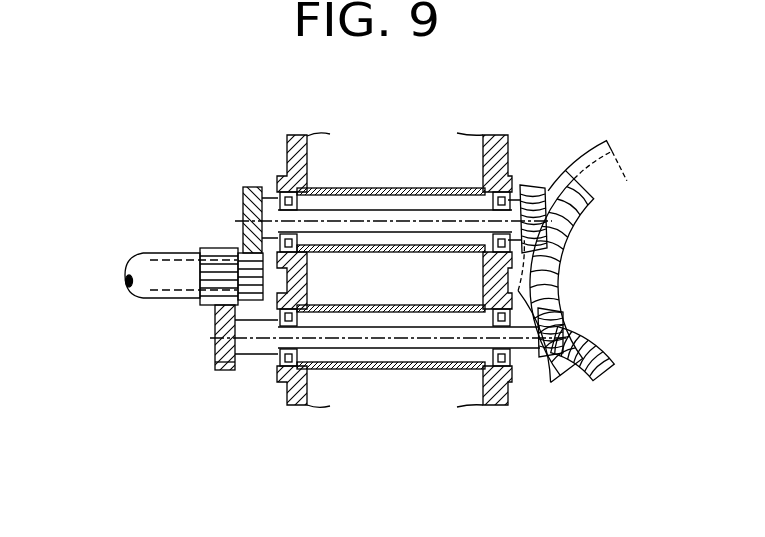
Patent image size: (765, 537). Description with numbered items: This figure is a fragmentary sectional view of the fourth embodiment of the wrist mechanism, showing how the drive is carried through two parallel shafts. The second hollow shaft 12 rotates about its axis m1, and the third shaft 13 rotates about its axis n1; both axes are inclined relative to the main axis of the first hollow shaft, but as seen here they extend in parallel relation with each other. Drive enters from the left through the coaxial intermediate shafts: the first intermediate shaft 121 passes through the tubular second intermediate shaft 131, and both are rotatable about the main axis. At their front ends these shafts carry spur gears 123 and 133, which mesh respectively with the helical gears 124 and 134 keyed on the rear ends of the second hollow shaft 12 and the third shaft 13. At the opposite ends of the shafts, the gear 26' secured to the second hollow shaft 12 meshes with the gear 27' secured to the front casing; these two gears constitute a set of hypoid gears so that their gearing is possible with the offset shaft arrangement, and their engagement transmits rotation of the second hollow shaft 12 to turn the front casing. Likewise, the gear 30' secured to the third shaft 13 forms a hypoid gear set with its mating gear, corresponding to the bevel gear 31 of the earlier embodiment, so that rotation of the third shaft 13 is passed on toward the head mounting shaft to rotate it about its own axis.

The second hollow shaft 12 is at (383, 217).
The third shaft 13 is at (382, 338).
The first intermediate shaft 121 is at (133, 272).
The spur gear 123 is at (252, 262).
The helical gear 124 is at (245, 187).
The second intermediate shaft 131 is at (162, 294).
The spur gear 133 is at (210, 306).
The helical gear 134 is at (227, 366).
The axis of the second hollow shaft m1 is at (273, 210).
The axis of the third shaft n1 is at (268, 340).
The hypoid gear 26' is at (580, 220).
The hypoid gear 27' is at (572, 225).
The hypoid gear 30' is at (596, 319).
The bevel gear 31 is at (584, 384).